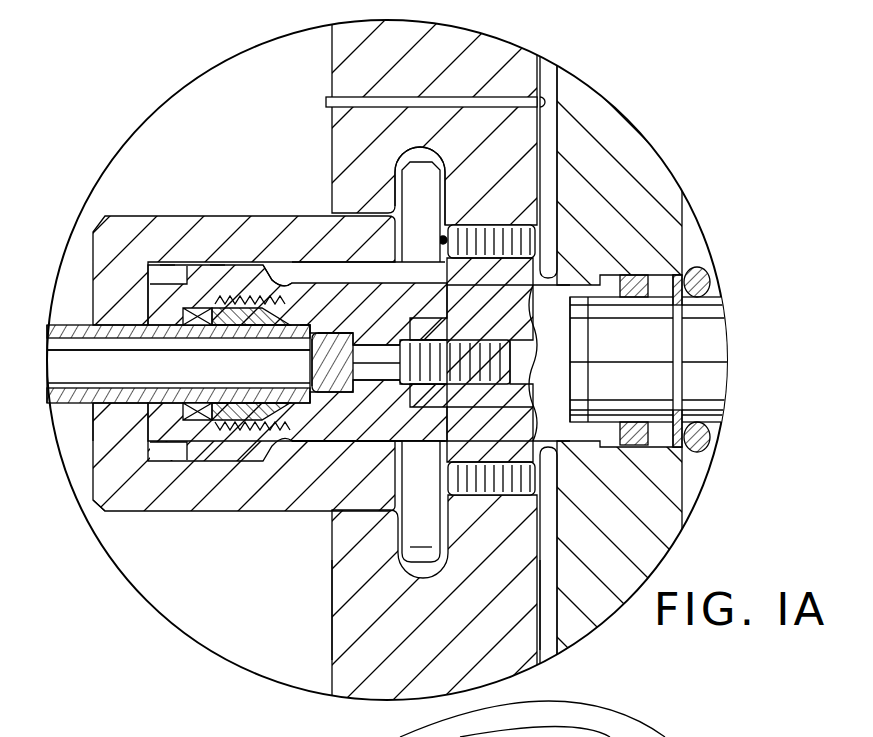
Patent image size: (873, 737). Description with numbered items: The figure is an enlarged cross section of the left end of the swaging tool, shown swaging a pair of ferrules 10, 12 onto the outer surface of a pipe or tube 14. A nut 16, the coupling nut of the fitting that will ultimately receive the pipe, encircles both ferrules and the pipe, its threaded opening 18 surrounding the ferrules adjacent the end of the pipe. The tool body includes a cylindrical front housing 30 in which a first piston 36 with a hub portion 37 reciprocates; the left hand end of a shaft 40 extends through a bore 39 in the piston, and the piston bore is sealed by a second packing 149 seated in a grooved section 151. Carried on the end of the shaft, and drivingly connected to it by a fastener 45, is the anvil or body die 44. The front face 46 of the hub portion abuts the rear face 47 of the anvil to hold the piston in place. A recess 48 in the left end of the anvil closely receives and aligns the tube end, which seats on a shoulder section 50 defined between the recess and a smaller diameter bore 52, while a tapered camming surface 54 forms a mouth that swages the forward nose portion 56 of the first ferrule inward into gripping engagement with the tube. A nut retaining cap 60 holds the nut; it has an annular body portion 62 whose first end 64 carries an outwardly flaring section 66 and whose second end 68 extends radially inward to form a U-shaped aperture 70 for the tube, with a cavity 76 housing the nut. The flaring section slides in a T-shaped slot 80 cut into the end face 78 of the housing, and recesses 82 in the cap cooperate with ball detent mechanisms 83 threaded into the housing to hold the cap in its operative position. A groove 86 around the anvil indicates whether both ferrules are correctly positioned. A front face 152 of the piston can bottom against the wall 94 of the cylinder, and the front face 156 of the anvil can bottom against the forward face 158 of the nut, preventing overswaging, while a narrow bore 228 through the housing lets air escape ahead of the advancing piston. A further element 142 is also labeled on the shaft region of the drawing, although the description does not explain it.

The first ferrule 10 is at (205, 393).
The second ferrule 12 is at (168, 390).
The pipe or tube 14 is at (47, 408).
The nut 16 is at (165, 258).
The threaded opening 18 is at (218, 258).
The front housing 30 is at (332, 672).
The first piston 36 is at (670, 550).
The hub portion 37 is at (578, 392).
The bore 39 is at (588, 290).
The shaft 40 is at (705, 372).
The anvil or body die 44 is at (333, 462).
The fastener 45 is at (373, 376).
The front face of hub portion 46 is at (448, 420).
The rear face of anvil 47 is at (452, 430).
The recess 48 is at (337, 376).
The shoulder section 50 is at (303, 322).
The smaller diameter bore 52 is at (340, 333).
The tapered swaging or camming surface 54 is at (224, 318).
The forward nose portion 56 is at (216, 430).
The nut retaining cap 60 is at (200, 517).
The annular body portion 62 is at (250, 228).
The first end 64 is at (400, 507).
The outwardly flaring section 66 is at (400, 548).
The second end 68 is at (84, 250).
The U-shaped aperture 70 is at (116, 398).
The cavity 76 is at (122, 497).
The end face 78 is at (335, 607).
The T-shaped slot 80 is at (412, 168).
The recesses 82 is at (440, 240).
The first pair of ball detent mechanisms 83 is at (490, 228).
The groove 86 is at (290, 447).
The wall 94 is at (585, 640).
The flange 142 is at (690, 287).
The second packing 149 is at (640, 290).
The grooved section 151 is at (627, 447).
The front face of first piston 152 is at (558, 82).
The front face of anvil 156 is at (338, 262).
The forward face of nut 158 is at (292, 300).
The bore of narrow diameter 228 is at (335, 100).